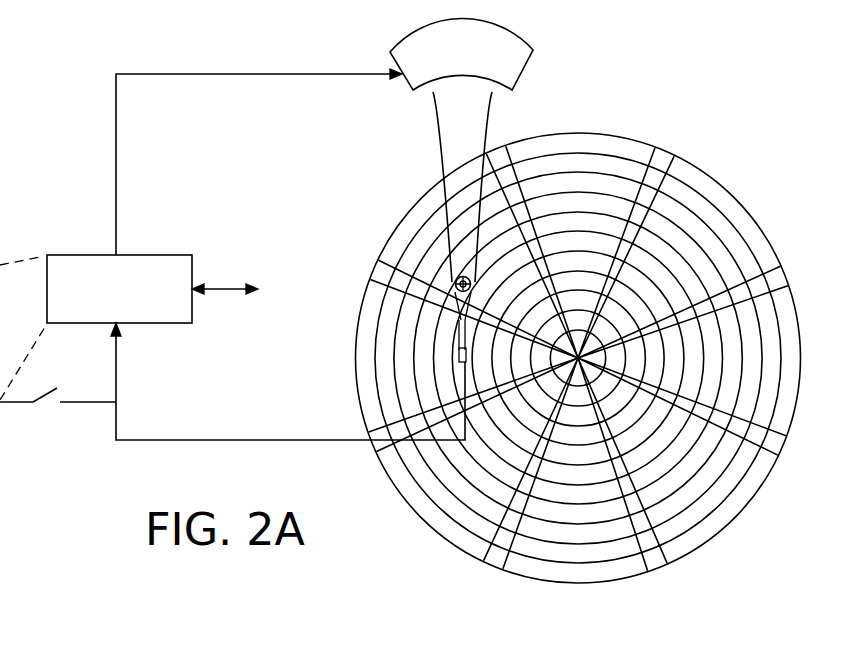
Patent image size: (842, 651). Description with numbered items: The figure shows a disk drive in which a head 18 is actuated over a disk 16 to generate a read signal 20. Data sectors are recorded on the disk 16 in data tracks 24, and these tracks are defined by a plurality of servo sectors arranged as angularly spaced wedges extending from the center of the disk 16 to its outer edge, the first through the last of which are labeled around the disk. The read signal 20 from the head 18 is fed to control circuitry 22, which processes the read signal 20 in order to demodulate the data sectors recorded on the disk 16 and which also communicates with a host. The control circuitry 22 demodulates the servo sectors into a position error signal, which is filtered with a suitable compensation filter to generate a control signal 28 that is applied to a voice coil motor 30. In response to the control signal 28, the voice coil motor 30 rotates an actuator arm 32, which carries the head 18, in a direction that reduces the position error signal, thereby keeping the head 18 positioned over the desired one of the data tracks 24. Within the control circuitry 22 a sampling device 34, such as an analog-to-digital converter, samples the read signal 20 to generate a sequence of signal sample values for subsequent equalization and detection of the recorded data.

The disk 16 is at (731, 185).
The head 18 is at (456, 364).
The read signal 20 is at (250, 440).
The control circuitry 22 is at (158, 255).
The data tracks 24 is at (576, 163).
The control signal 28 is at (116, 152).
The voice coil motor 30 is at (405, 83).
The actuator arm 32 is at (444, 156).
The sampling device 34 is at (48, 412).